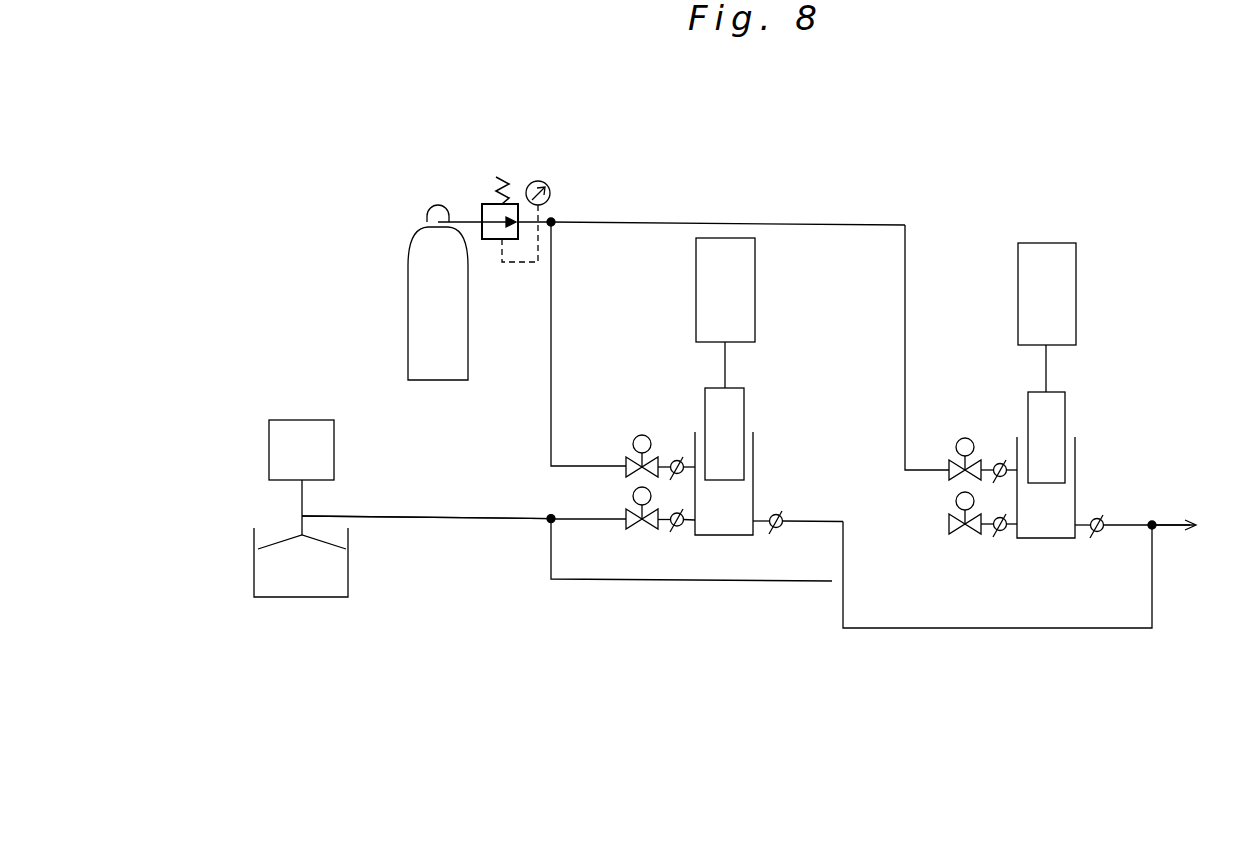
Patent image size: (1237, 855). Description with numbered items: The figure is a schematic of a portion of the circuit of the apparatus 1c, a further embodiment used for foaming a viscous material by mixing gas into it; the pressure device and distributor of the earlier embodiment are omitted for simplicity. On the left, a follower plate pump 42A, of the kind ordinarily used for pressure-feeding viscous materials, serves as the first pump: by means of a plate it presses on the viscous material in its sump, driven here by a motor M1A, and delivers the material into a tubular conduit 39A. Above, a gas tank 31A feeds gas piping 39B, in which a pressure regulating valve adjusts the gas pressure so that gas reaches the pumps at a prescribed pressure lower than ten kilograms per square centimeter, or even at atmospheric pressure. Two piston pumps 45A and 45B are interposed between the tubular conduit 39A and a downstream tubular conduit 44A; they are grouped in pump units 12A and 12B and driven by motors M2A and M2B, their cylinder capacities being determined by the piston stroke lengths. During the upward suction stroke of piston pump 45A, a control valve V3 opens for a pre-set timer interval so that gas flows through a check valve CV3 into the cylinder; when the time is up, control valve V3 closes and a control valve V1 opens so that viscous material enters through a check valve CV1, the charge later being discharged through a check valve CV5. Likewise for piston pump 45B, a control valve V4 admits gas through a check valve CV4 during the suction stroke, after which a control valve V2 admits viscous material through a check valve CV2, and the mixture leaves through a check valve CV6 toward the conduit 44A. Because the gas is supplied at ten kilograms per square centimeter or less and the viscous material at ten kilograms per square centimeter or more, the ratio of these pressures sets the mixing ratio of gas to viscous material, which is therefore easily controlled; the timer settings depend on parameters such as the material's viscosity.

The apparatus 1c is at (601, 82).
The tank 31A is at (408, 262).
The gas piping 39B is at (587, 222).
The stirring motor M1A is at (334, 440).
The tubular conduit 39A is at (481, 516).
The follower plate pump 42A is at (348, 570).
The first pump unit 12A is at (861, 288).
The pump motor M2A is at (696, 285).
The piston pump 45A is at (755, 450).
The control valve V3 is at (636, 436).
The check valve CV3 is at (680, 456).
The control valve V1 is at (638, 532).
The check valve CV1 is at (680, 532).
The check valve CV5 is at (781, 512).
The second pump unit 12B is at (1169, 292).
The pump motor M2B is at (1068, 323).
The piston pump 45B is at (1077, 460).
The control valve V4 is at (962, 437).
The check valve CV4 is at (1000, 456).
The control valve V2 is at (958, 536).
The check valve CV2 is at (1000, 538).
The check valve CV6 is at (1094, 536).
The tubular conduit 44A is at (1162, 522).